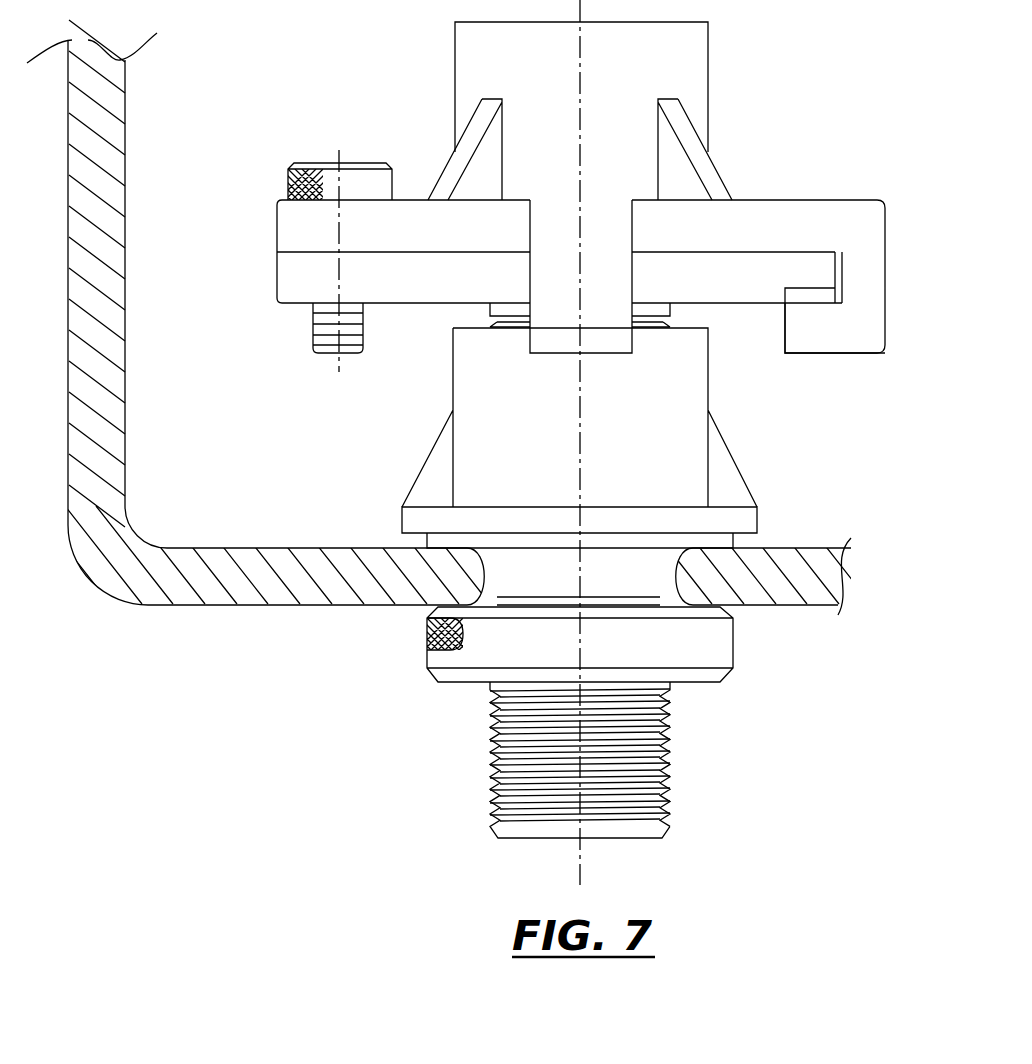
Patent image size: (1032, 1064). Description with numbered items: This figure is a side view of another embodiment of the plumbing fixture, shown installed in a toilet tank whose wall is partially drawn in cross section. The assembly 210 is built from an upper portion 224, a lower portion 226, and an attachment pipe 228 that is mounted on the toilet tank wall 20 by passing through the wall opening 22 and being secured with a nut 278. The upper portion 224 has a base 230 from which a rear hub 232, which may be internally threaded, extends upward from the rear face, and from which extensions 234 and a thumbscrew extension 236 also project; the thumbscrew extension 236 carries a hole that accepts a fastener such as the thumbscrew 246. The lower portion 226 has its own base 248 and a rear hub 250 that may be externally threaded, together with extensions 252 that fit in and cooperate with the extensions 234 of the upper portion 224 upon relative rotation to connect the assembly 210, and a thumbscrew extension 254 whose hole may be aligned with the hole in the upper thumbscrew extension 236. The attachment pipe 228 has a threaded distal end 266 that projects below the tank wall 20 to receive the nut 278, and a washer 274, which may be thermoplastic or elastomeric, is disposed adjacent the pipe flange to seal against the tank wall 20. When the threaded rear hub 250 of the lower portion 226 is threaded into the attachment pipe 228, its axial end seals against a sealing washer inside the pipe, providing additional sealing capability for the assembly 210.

The toilet tank wall 20 is at (232, 580).
The opening 22 is at (490, 598).
The assembly 210 is at (642, 111).
The upper portion 224 is at (710, 67).
The lower portion 226 is at (408, 304).
The attachment pipe 228 is at (758, 518).
The base 230 is at (763, 223).
The rear hub 232 is at (453, 72).
The extensions 234 is at (550, 280).
The thumbscrew extension 236 is at (288, 230).
The thumbscrew 246 is at (315, 168).
The base 248 is at (742, 288).
The rear hub 250 is at (657, 321).
The extensions 252 is at (815, 272).
The thumbscrew extension 254 is at (288, 283).
The distal end 266 is at (490, 743).
The washer 274 is at (507, 575).
The nut 278 is at (713, 647).